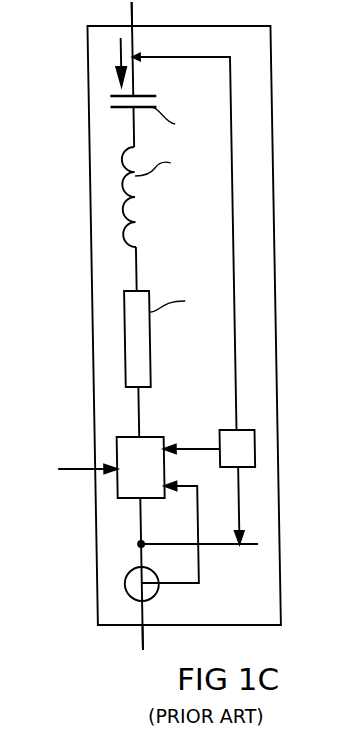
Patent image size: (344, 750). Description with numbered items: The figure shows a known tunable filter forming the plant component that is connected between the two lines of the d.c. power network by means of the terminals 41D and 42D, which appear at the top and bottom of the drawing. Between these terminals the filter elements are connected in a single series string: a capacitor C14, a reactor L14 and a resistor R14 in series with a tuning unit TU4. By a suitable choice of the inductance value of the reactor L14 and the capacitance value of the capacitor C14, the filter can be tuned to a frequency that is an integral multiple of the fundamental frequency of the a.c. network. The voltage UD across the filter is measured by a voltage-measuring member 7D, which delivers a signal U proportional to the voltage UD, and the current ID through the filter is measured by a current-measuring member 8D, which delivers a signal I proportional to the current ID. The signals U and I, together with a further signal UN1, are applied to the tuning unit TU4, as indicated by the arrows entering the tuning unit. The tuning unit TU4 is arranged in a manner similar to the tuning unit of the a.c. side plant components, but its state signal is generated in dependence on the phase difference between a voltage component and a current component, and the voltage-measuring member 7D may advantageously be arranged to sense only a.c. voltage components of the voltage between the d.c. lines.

The terminal 41D is at (131, 18).
The terminal 42D is at (131, 645).
The capacitor C14 is at (157, 116).
The reactor L14 is at (163, 197).
The resistor R14 is at (170, 339).
The tuning unit TU4 is at (119, 498).
The voltage-measuring member 7D is at (241, 428).
The current-measuring member 8D is at (142, 596).
The signal UN1 is at (67, 469).
The current through the filter ID is at (111, 62).
The voltage across the filter UD is at (185, 242).
The voltage signal U is at (191, 437).
The current signal I is at (170, 524).